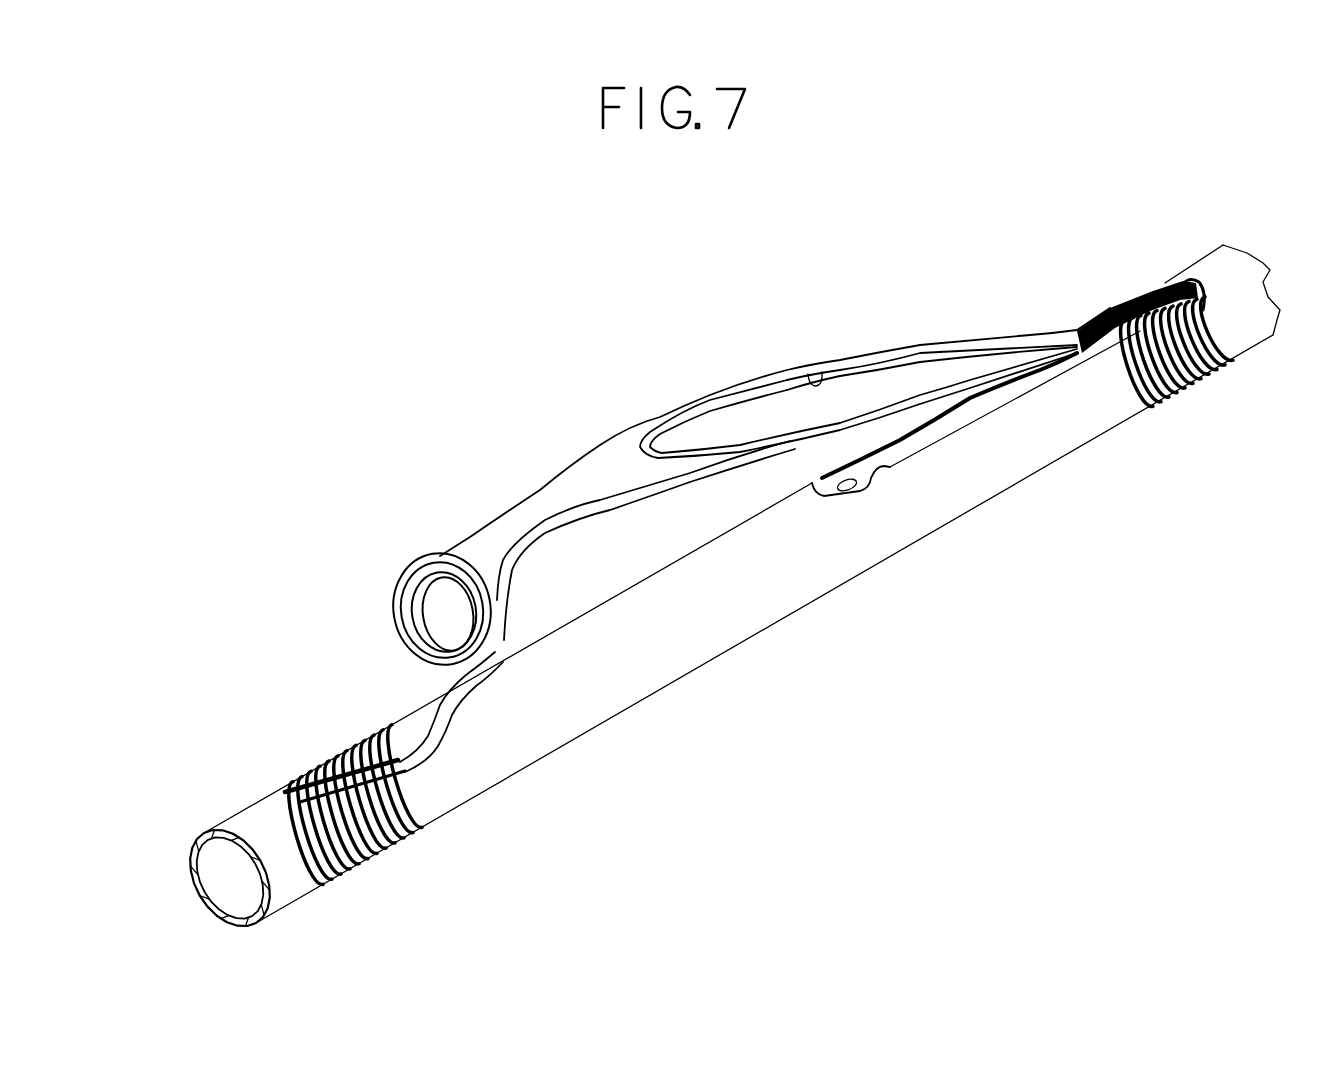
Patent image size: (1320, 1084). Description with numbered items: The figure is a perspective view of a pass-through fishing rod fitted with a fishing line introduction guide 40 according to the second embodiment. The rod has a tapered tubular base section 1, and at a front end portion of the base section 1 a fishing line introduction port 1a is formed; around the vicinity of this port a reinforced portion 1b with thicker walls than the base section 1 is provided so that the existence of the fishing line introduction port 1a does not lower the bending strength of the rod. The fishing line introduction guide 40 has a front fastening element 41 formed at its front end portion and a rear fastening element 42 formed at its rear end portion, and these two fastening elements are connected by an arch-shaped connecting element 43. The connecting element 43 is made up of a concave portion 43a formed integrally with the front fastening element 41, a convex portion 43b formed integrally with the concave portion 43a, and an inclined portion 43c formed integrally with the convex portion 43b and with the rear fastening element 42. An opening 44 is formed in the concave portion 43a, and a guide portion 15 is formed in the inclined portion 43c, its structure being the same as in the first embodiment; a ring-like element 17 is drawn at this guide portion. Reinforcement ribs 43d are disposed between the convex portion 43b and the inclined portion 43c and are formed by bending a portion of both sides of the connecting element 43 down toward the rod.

The base section 1 is at (668, 705).
The fishing line introduction port 1a is at (893, 478).
The reinforced portion 1b is at (520, 760).
The guide portion 15 is at (388, 568).
The grommet 17 is at (408, 717).
The fishing line introduction guide 40 is at (667, 360).
The front fastening element 41 is at (1153, 282).
The rear fastening element 42 is at (352, 745).
The connecting element 43 is at (630, 440).
The concave portion 43a is at (912, 355).
The convex portion 43b is at (525, 500).
The inclined portion 43c is at (420, 663).
The reinforcement ribs 43d is at (510, 566).
The opening 44 is at (820, 372).